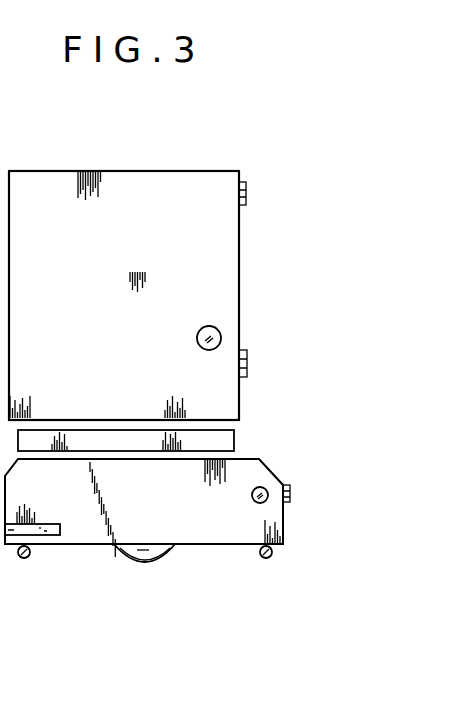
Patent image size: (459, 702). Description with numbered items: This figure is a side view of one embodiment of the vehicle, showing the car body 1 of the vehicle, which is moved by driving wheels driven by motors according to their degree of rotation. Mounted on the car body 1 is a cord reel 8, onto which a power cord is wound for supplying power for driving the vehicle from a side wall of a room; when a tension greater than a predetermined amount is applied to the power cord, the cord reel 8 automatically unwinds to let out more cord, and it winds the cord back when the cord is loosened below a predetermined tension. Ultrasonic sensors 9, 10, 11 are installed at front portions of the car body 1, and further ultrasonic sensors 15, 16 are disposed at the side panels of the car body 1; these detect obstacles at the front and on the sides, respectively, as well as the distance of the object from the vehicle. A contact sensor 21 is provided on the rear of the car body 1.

The car body 1 is at (254, 224).
The cord reel 8 is at (236, 440).
The ultrasonic sensor 9 is at (246, 192).
The ultrasonic sensor 10 is at (247, 362).
The ultrasonic sensor 11 is at (290, 494).
The ultrasonic sensor 15 is at (221, 333).
The ultrasonic sensor 16 is at (268, 500).
The contact sensor 21 is at (45, 531).